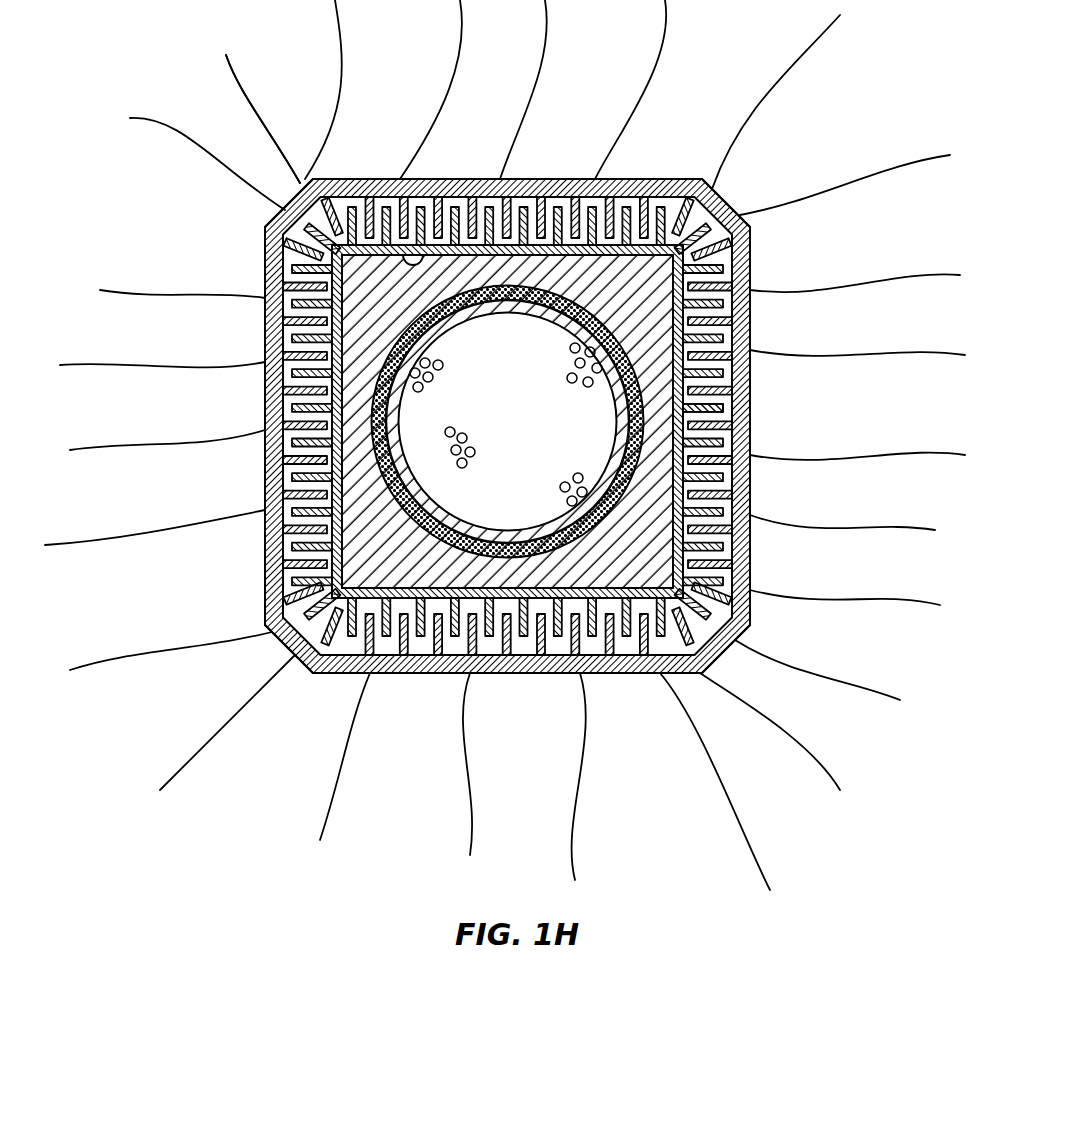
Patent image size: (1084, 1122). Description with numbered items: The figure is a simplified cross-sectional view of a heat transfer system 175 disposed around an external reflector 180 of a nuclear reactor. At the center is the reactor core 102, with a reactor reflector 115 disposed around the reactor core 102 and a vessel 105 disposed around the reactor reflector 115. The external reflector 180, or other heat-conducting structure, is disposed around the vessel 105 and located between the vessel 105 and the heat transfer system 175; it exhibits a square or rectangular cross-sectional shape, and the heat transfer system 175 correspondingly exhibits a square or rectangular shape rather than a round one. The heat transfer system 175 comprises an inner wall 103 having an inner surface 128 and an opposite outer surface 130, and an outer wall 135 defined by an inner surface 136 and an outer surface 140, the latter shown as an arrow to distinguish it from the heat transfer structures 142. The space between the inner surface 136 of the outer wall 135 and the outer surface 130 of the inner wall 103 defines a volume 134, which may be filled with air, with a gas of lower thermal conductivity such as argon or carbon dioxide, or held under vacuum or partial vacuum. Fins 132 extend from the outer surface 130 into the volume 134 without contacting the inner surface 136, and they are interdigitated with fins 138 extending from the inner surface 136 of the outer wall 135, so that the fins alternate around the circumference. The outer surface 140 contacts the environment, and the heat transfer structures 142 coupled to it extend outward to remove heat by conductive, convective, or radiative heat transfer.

The reactor core 102 is at (534, 432).
The inner wall 103 is at (740, 262).
The vessel 105 is at (410, 522).
The reactor reflector 115 is at (377, 447).
The inner surface 128 is at (413, 256).
The outer surface 130 is at (283, 272).
The fins 132 is at (732, 305).
The volume 134 is at (733, 406).
The outer wall 135 is at (703, 210).
The inner surface 136 is at (292, 212).
The fins 138 is at (598, 192).
The outer surface 140 is at (752, 422).
The heat transfer structures 142 is at (403, 118).
The heat transfer system 175 is at (300, 124).
The external reflector 180 is at (655, 572).